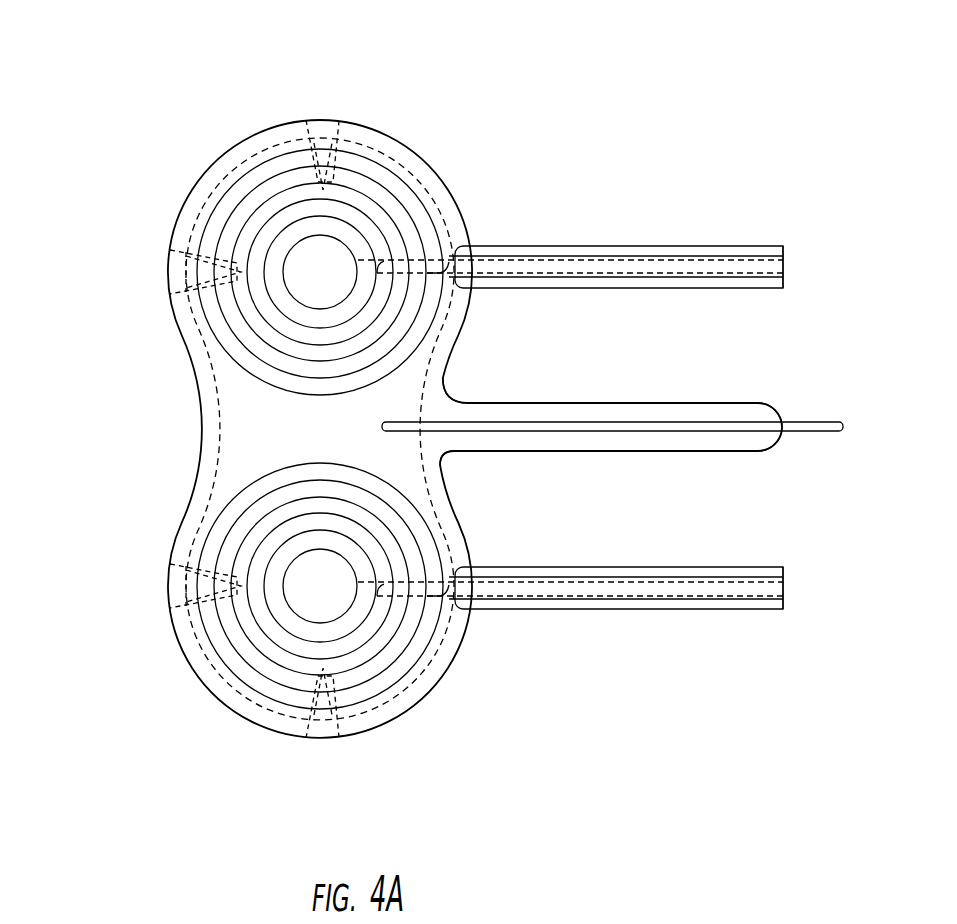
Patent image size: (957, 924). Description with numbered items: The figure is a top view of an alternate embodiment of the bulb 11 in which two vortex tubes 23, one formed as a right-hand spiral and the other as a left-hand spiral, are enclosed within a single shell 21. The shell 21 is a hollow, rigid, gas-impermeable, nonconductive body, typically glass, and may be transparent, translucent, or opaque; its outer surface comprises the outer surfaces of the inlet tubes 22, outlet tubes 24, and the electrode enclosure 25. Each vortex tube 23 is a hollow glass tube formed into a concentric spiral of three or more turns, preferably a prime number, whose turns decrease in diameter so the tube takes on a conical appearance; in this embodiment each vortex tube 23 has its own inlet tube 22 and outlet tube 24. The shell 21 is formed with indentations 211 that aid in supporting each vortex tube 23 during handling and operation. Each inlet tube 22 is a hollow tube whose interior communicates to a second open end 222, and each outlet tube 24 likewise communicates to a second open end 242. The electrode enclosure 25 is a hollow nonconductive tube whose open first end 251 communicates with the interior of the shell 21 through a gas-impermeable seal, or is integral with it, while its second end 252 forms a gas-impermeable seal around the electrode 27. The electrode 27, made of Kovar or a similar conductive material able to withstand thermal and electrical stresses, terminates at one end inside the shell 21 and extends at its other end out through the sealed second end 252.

The bulb 11 is at (118, 134).
The shell 21 is at (422, 160).
The indentation 211 is at (318, 135).
The inlet tube 22 is at (658, 257).
The second open end 222 is at (784, 270).
The vortex tube 23 is at (242, 172).
The outlet tube 24 is at (535, 247).
The second open end 242 is at (784, 250).
The electrode enclosure 25 is at (737, 403).
The first end 251 is at (782, 421).
The second end 252 is at (443, 468).
The electrode 27 is at (815, 432).